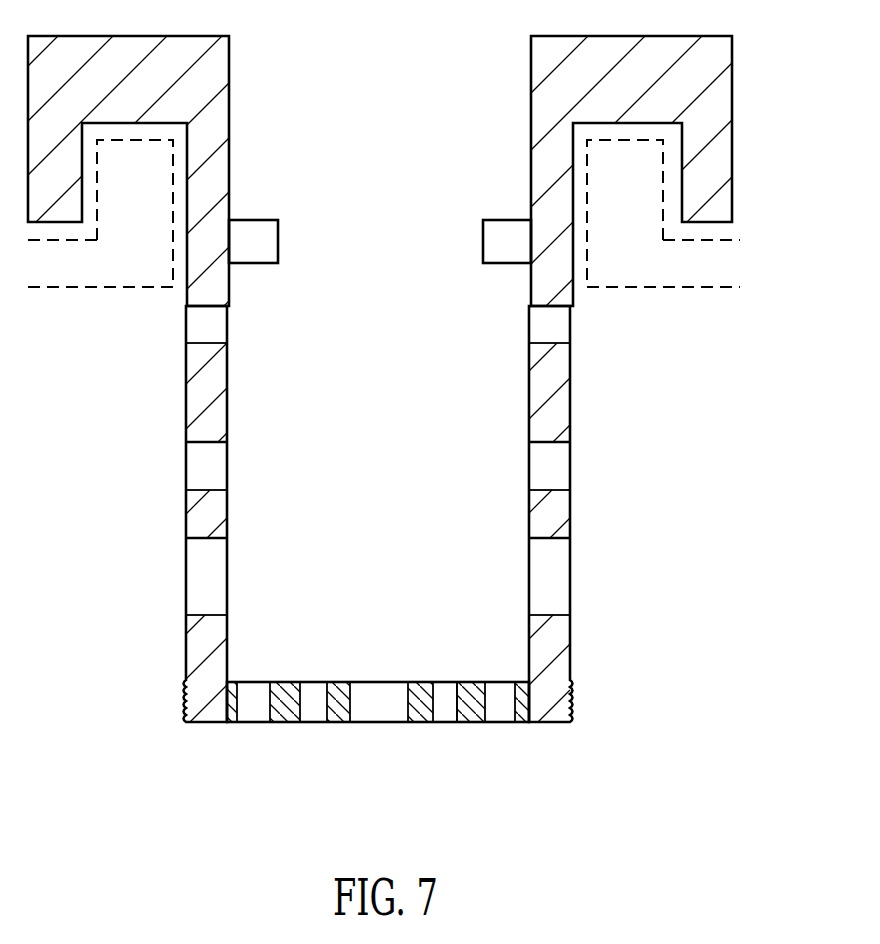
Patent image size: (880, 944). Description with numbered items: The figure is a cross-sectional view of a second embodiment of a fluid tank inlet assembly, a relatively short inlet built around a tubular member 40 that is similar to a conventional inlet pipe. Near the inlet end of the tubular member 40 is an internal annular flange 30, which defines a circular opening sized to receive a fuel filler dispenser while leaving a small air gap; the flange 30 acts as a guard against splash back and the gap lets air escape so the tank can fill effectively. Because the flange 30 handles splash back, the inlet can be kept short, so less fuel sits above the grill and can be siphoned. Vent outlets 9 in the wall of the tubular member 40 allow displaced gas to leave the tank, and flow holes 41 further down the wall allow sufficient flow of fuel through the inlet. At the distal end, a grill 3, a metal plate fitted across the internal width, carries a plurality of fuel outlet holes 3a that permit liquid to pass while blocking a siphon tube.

The grill 3 is at (467, 707).
The fuel outlet holes 3a is at (447, 690).
The vent outlets 9 is at (203, 327).
The internal annular flange 30 is at (500, 240).
The tubular member 40 is at (628, 415).
The flow holes 41 is at (193, 463).